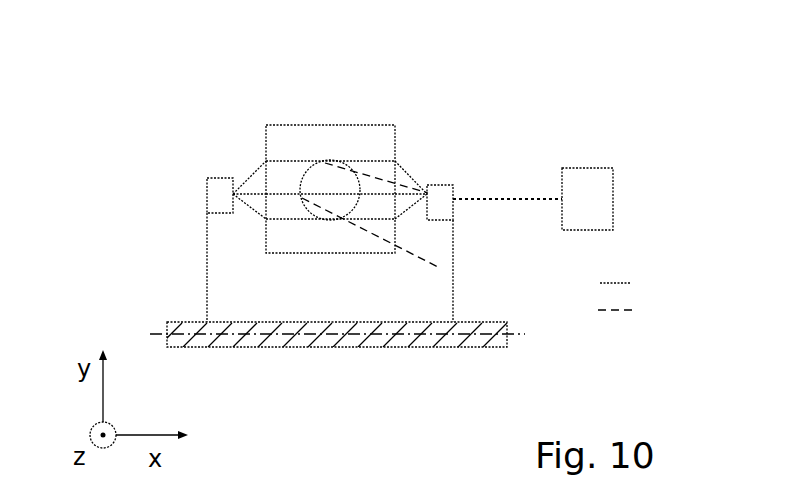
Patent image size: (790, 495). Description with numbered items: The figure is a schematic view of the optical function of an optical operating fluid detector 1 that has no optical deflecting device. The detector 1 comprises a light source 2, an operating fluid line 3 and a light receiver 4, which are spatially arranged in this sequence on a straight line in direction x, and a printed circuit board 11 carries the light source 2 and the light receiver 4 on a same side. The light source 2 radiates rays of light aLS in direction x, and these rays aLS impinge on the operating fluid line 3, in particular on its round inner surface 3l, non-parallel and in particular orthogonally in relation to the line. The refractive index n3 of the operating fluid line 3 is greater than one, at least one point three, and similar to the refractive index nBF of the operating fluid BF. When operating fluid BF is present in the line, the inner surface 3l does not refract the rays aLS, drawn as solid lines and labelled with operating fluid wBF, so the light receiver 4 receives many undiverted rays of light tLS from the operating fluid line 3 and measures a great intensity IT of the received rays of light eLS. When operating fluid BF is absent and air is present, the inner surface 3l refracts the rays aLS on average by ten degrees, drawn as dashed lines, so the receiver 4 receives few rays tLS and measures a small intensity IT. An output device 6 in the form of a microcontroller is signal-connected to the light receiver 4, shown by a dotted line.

The optical operating fluid detector 1 is at (222, 113).
The light source 2 is at (210, 197).
The operating fluid line 3 is at (330, 158).
The inner surface of the operating fluid line 3l is at (318, 220).
The light receiver 4 is at (453, 191).
The output device 6 is at (596, 212).
The printed circuit board 11 is at (477, 347).
The refractive index of the operating fluid line n3 is at (284, 147).
The rays of light from the light source aLS is at (253, 173).
The received rays of light eLS is at (440, 192).
The rays of light from the operating fluid line tLS is at (371, 233).
The intensity of the received rays of light IT is at (447, 205).
The refractive index of operating fluid nBF is at (312, 198).
The operating fluid BF is at (338, 202).
The with operating fluid wBF is at (645, 282).